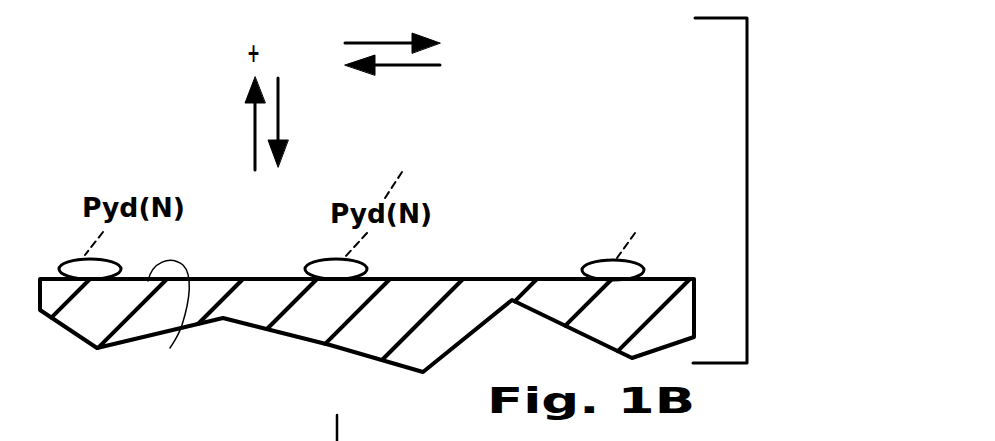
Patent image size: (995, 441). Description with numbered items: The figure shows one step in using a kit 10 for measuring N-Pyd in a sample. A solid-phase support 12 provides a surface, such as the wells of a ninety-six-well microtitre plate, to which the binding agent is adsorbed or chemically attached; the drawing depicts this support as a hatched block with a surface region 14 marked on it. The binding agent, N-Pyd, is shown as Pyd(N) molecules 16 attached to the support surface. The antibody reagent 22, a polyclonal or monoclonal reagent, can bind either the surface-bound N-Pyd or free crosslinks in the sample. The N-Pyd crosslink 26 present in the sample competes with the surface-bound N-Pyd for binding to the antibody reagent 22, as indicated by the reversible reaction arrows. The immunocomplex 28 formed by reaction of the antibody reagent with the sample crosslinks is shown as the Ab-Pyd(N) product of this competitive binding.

The kit 10 is at (765, 138).
The solid-phase support 12 is at (90, 327).
The surface binding region 14 is at (168, 324).
The Pyd(N) molecule 16 is at (632, 200).
The antibody reagent 22 is at (288, 42).
The N-Pyd crosslink 26 is at (148, 75).
The immunocomplex 28 is at (537, 70).